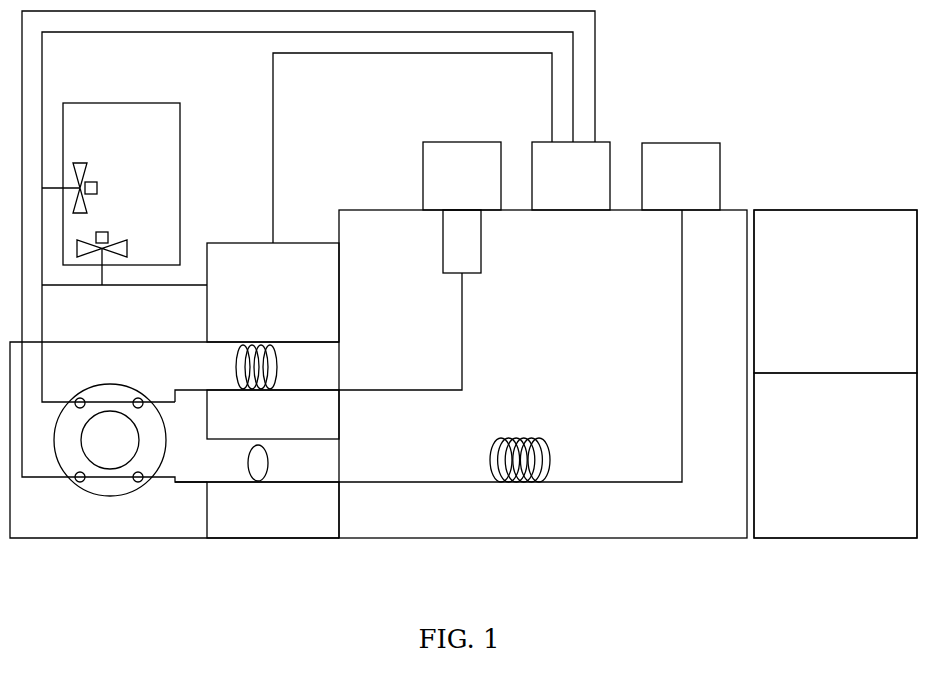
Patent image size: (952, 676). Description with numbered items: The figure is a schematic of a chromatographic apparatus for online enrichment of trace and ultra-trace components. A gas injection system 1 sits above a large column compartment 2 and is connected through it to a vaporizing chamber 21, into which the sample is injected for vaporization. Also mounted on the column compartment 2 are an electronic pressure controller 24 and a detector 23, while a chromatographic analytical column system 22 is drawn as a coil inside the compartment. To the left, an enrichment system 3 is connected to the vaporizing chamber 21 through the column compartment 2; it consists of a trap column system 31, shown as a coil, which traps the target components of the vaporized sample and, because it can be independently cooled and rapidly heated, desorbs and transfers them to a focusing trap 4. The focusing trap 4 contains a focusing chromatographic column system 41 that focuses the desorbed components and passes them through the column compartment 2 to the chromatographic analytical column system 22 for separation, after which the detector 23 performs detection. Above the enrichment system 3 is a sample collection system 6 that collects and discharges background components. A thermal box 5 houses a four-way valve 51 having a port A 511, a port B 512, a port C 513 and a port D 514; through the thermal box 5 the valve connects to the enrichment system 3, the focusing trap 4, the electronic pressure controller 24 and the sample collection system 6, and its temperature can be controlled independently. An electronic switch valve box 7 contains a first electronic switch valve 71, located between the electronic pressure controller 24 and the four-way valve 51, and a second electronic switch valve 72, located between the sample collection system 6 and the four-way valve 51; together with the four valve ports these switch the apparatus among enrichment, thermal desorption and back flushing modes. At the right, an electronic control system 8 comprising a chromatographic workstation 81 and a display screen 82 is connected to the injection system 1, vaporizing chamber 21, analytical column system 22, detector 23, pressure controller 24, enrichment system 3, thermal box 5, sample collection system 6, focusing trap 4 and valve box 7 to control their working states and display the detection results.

The injection system 1 is at (462, 176).
The column compartment 2 is at (461, 374).
The vaporizing chamber 21 is at (342, 306).
The chromatographic analytical column system 22 is at (520, 445).
The detector 23 is at (681, 176).
The electronic pressure controller 24 is at (571, 176).
The enrichment system 3 is at (273, 414).
The trap column system 31 is at (270, 367).
The focusing trap 4 is at (273, 510).
The focusing chromatographic column system 41 is at (276, 463).
The thermal box 5 is at (120, 443).
The four-way valve 51 is at (110, 440).
The port A 511 is at (154, 385).
The port B 512 is at (154, 498).
The port C 513 is at (66, 498).
The port D 514 is at (65, 385).
The sample collection system 6 is at (273, 292).
The electronic switch valve box 7 is at (121, 184).
The first electronic switch valve 71 is at (69, 170).
The second electronic switch valve 72 is at (120, 258).
The electronic control system 8 is at (835, 374).
The chromatographic workstation 81 is at (835, 291).
The display screen 82 is at (835, 455).